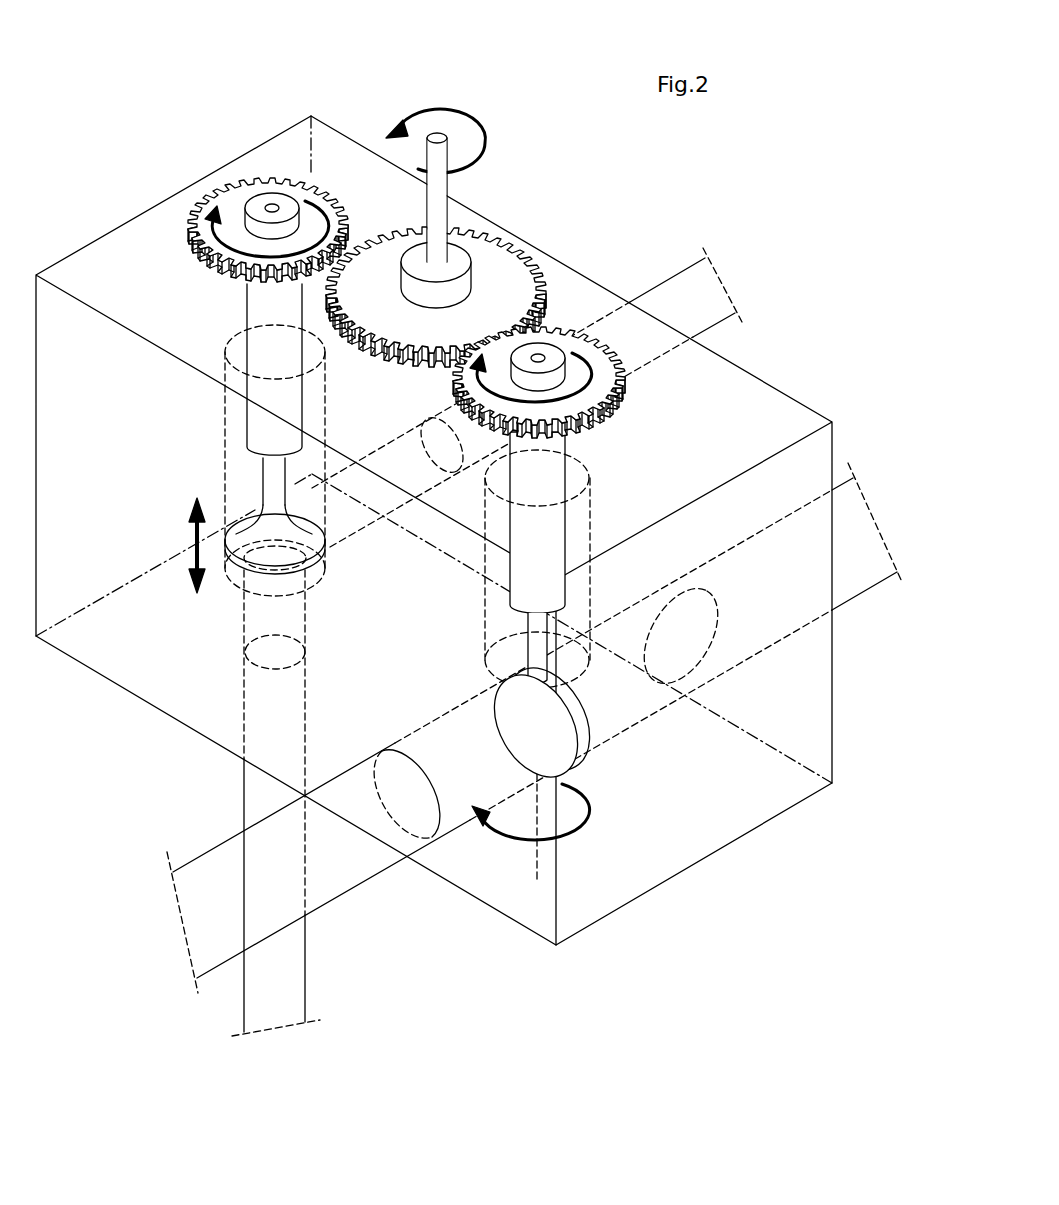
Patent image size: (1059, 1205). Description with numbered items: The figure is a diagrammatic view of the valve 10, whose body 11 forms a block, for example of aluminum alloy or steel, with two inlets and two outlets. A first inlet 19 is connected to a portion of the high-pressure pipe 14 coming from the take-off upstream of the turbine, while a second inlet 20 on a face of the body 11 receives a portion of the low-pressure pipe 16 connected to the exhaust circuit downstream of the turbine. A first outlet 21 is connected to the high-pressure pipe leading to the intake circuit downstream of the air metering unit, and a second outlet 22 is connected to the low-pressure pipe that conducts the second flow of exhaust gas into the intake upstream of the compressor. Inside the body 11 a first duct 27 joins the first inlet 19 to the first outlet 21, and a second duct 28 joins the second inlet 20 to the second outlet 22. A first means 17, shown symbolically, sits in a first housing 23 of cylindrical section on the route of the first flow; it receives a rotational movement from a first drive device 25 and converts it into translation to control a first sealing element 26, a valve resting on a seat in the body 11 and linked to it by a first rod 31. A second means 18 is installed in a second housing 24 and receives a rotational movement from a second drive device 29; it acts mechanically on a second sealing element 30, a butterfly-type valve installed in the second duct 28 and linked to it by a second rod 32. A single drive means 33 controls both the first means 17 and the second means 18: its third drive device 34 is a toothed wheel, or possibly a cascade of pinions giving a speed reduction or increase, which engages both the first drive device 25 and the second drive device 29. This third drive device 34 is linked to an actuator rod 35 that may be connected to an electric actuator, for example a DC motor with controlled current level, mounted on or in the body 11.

The valve 10 is at (238, 100).
The body 11 is at (93, 340).
The high-pressure pipe 14 is at (678, 287).
The second channel 16 is at (857, 580).
The first means 17 is at (293, 357).
The second means 18 is at (567, 478).
The first inlet 19 is at (257, 663).
The second inlet 20 is at (427, 807).
The first outlet 21 is at (440, 440).
The second outlet 22 is at (718, 637).
The first housing 23 is at (220, 403).
The second housing 24 is at (483, 607).
The first drive device 25 is at (222, 210).
The first sealing element 26 is at (240, 537).
The first duct 27 is at (307, 618).
The second duct 28 is at (663, 707).
The second drive device 29 is at (562, 333).
The second sealing element 30 is at (573, 722).
The first rod 31 is at (270, 477).
The second rod 32 is at (537, 648).
The drive means 33 is at (518, 206).
The third drive device 34 is at (517, 283).
The drive shaft 35 is at (433, 205).